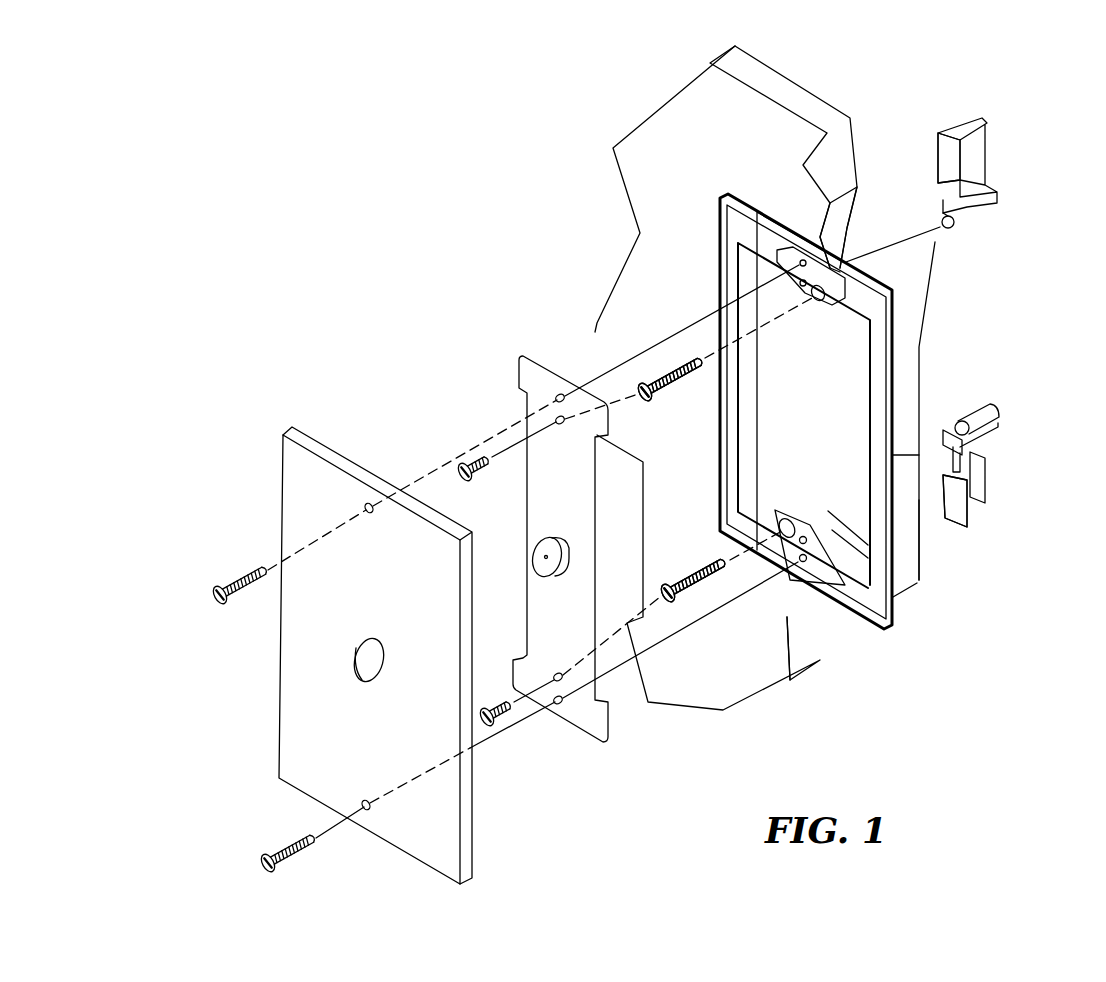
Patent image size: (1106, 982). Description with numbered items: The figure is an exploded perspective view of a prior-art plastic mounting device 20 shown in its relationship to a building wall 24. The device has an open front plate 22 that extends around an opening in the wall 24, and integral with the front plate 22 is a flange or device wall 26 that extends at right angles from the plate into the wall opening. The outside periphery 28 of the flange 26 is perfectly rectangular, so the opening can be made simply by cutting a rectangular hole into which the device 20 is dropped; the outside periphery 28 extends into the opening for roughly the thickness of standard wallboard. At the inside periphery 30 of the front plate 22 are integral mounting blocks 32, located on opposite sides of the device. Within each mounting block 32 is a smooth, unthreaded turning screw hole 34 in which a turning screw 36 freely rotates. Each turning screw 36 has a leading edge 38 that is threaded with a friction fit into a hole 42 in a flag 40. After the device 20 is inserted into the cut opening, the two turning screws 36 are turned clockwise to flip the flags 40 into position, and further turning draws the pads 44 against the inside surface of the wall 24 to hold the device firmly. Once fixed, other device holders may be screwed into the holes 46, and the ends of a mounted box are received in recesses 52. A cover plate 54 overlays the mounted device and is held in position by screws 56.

The plastic mounting device 20 is at (973, 343).
The open front plate 22 is at (878, 603).
The wall 24 is at (822, 118).
The flange or device wall 26 is at (905, 576).
The outside periphery 28 is at (909, 441).
The inside periphery 30 is at (798, 580).
The mounting blocks 32 is at (820, 301).
The turning screw holes 34 is at (832, 268).
The turning screws 36 is at (688, 385).
The leading edge 38 is at (700, 355).
The flags 40 is at (993, 150).
The hole 42 is at (952, 228).
The pads 44 is at (940, 160).
The holes 46 is at (801, 260).
The recesses 52 is at (795, 260).
The cover plate 54 is at (427, 604).
The screws 56 is at (245, 573).